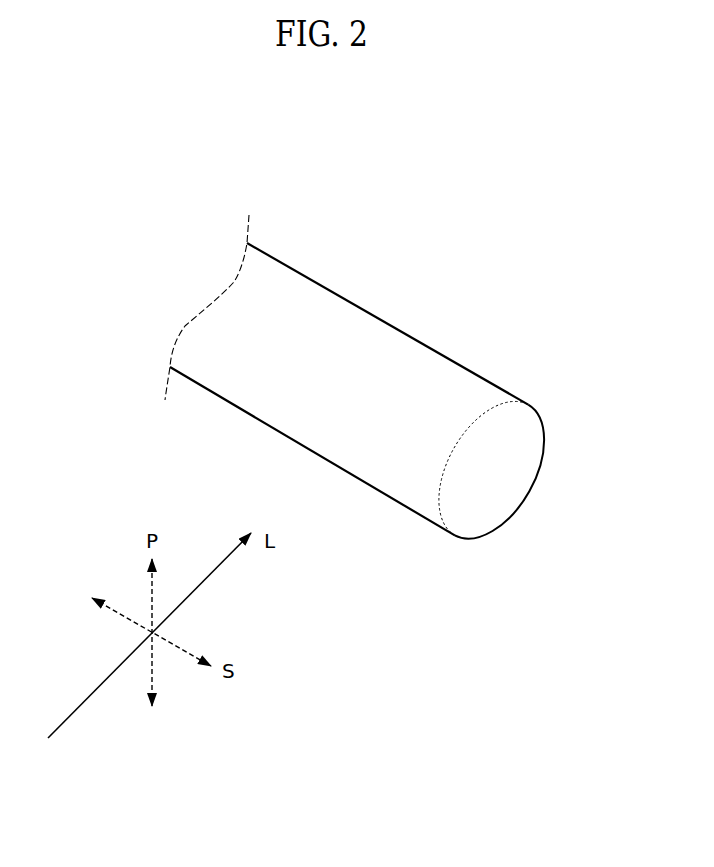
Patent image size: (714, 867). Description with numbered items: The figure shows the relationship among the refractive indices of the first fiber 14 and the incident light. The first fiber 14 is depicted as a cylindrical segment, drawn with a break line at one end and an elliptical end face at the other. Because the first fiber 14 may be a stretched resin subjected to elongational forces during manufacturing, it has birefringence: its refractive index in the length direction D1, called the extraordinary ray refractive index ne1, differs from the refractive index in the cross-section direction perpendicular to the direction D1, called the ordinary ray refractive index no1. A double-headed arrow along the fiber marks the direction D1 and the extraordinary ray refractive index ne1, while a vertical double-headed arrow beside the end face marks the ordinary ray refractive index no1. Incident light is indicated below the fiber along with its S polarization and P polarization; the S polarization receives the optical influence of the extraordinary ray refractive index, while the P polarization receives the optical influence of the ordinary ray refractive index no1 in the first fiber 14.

The first fiber 14 is at (474, 381).
The length direction D1 is at (176, 295).
The extraordinary ray refractive index ne1 is at (453, 326).
The ordinary ray refractive index no1 is at (560, 467).